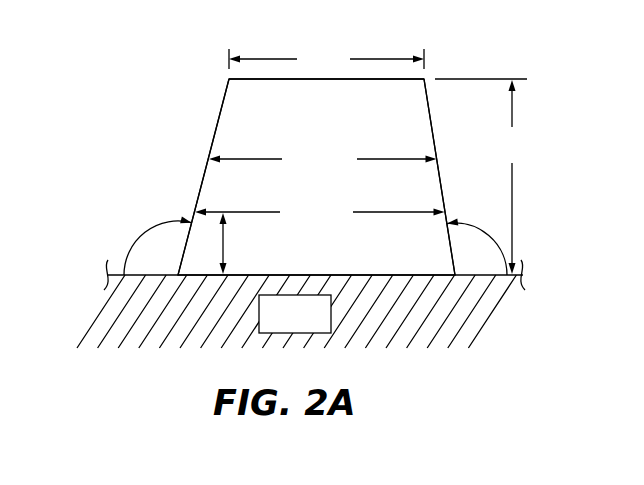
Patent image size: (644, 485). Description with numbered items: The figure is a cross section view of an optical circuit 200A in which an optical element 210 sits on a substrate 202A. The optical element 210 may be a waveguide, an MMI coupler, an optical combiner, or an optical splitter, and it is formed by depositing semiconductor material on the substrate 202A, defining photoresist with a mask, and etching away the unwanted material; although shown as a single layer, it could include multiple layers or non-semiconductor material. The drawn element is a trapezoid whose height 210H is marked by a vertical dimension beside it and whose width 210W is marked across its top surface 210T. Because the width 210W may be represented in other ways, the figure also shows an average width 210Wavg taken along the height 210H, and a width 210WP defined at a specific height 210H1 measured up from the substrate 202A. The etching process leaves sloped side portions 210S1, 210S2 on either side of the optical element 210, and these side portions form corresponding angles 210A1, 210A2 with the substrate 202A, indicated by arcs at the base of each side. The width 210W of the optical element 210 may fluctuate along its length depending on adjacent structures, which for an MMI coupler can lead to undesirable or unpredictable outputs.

The semiconductor structure 200A is at (143, 58).
The substrate 202A is at (301, 304).
The optical element 210 is at (316, 177).
The width 210W is at (326, 60).
The top surface 210T is at (425, 79).
The side portion 210S1 is at (213, 137).
The side portion 210S2 is at (430, 115).
The height 210H is at (486, 176).
The average width 210Wavg is at (323, 159).
The width at a specific height 210WP is at (320, 212).
The specific height 210H1 is at (224, 244).
The angle 210A1 is at (140, 232).
The angle 210A2 is at (472, 222).